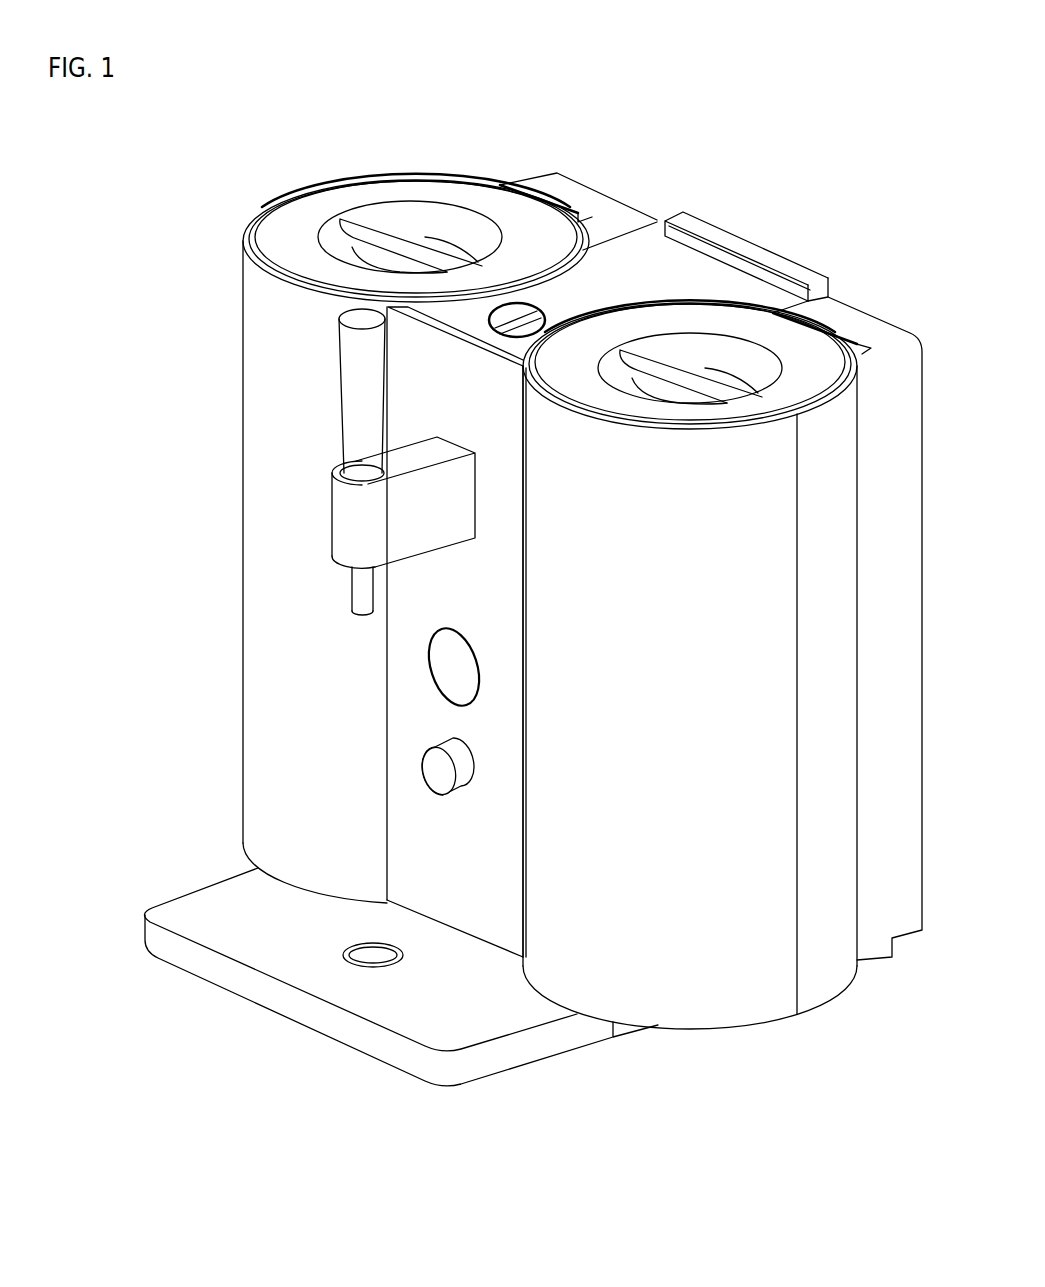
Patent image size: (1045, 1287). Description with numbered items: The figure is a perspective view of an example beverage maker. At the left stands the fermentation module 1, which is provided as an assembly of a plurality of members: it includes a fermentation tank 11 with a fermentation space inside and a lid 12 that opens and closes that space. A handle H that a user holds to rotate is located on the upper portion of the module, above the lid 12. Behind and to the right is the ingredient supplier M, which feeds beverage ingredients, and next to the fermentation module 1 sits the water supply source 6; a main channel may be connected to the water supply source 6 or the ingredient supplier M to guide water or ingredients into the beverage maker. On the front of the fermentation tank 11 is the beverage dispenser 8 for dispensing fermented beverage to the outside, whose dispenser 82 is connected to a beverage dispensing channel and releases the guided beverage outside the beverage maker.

The fermentation module 1 is at (216, 255).
The fermentation tank 11 is at (232, 378).
The lid 12 is at (285, 228).
The handle H is at (383, 215).
The ingredient supplier M is at (772, 228).
The water supply source 6 is at (805, 342).
The beverage dispenser 8 is at (315, 503).
The dispenser 82 is at (343, 552).